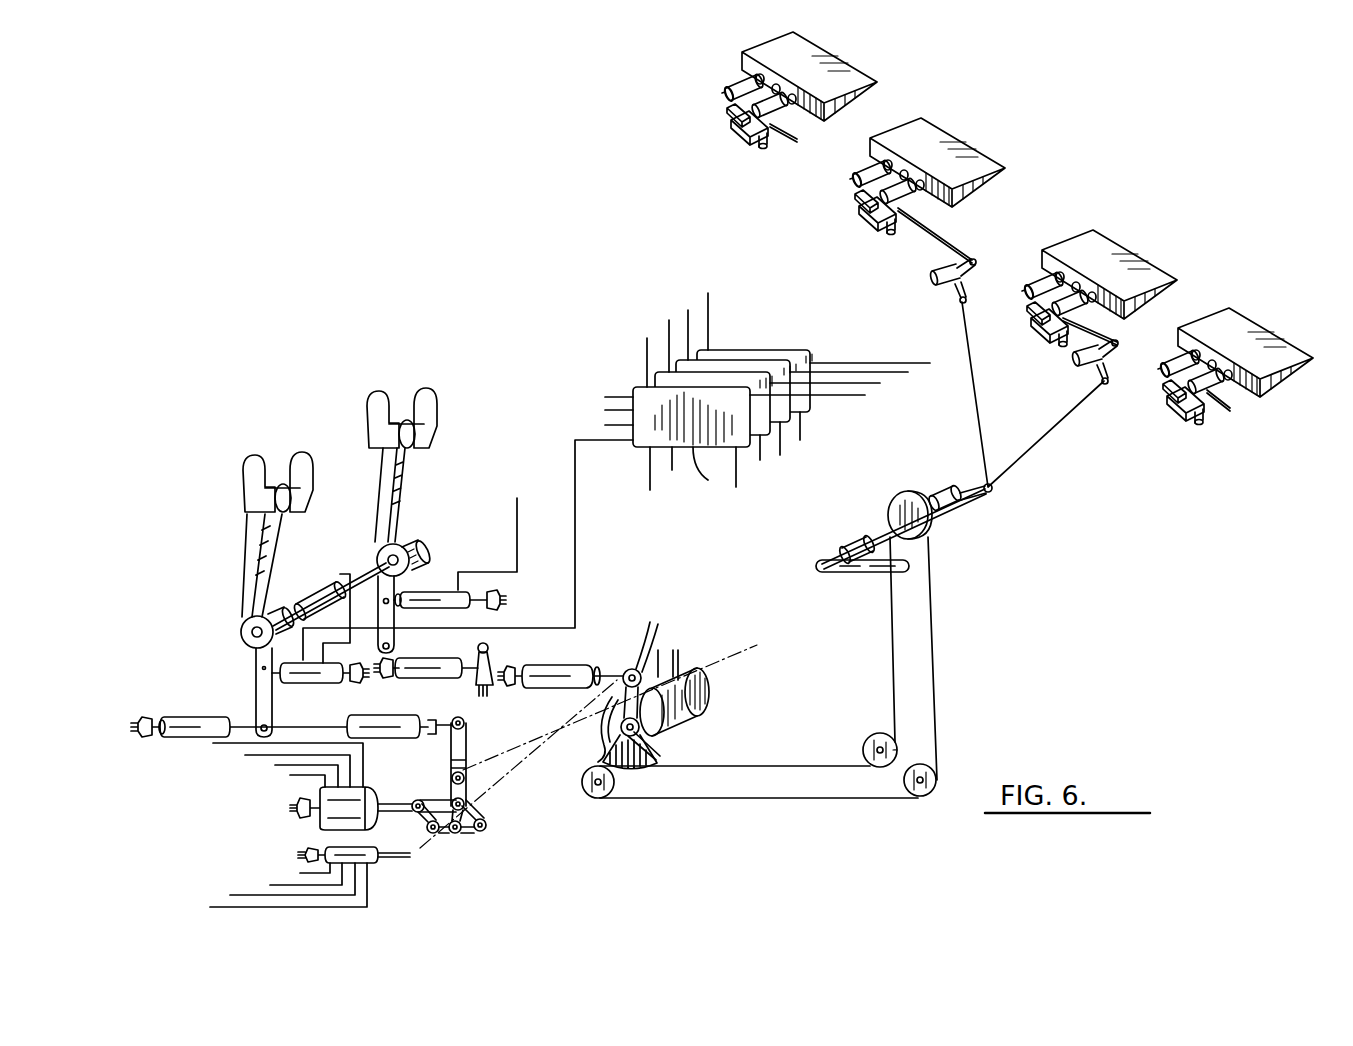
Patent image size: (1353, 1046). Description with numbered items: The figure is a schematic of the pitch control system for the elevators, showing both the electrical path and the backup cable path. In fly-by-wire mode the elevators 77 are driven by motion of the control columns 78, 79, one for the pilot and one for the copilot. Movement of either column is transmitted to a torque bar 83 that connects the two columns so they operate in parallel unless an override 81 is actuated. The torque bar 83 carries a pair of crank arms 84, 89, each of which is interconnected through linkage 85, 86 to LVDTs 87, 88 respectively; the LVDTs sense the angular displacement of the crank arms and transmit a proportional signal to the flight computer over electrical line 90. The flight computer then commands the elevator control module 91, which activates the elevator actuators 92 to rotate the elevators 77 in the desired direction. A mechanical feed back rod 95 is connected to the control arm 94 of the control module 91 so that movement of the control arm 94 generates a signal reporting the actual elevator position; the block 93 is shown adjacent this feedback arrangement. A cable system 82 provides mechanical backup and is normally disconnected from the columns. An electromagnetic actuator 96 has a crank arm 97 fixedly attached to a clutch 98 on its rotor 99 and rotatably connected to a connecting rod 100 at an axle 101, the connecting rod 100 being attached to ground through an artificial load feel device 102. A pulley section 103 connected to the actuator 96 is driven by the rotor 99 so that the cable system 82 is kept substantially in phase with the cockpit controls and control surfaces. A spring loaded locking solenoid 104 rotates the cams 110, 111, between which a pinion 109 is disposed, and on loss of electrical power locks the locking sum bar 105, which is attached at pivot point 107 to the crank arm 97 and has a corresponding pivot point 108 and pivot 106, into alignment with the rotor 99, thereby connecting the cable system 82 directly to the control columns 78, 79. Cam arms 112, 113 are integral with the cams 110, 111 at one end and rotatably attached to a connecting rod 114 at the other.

The elevators 77 is at (826, 54).
The control column 78 is at (297, 518).
The control column 79 is at (405, 477).
The override 81 is at (317, 584).
The cable system 82 is at (725, 800).
The torque bar 83 is at (380, 556).
The crank arm 84 is at (258, 672).
The linkage 85 is at (255, 650).
The linkage 86 is at (380, 606).
The LVDT 87 is at (313, 684).
The LVDT 88 is at (438, 613).
The crank arm 89 is at (427, 553).
The electrical line 90 is at (576, 532).
The elevator control module 91 is at (762, 142).
The elevator actuator 92 is at (743, 80).
The slide block 93 is at (735, 130).
The control arm 94 is at (727, 110).
The mechanical feed back rod 95 is at (727, 92).
The electromagnetic actuator (EMA) 96 is at (707, 702).
The crank arm 97 is at (612, 735).
The clutch 98 is at (668, 732).
The rotor 99 is at (592, 760).
The connecting rod 100 is at (623, 670).
The axle 101 is at (676, 651).
The artificial load feel device 102 is at (528, 664).
The pulley section 103 is at (660, 757).
The spring loaded locking solenoid 104 is at (372, 790).
The locking sum bar 105 is at (466, 725).
The pivot 106 is at (466, 780).
The pivot point 107 is at (457, 775).
The pivot point 108 is at (650, 640).
The pinion 109 is at (456, 840).
The cam 110 is at (443, 838).
The cam 111 is at (476, 836).
The cam arm 112 is at (400, 856).
The cam arm 113 is at (476, 822).
The connecting rod 114 is at (375, 800).